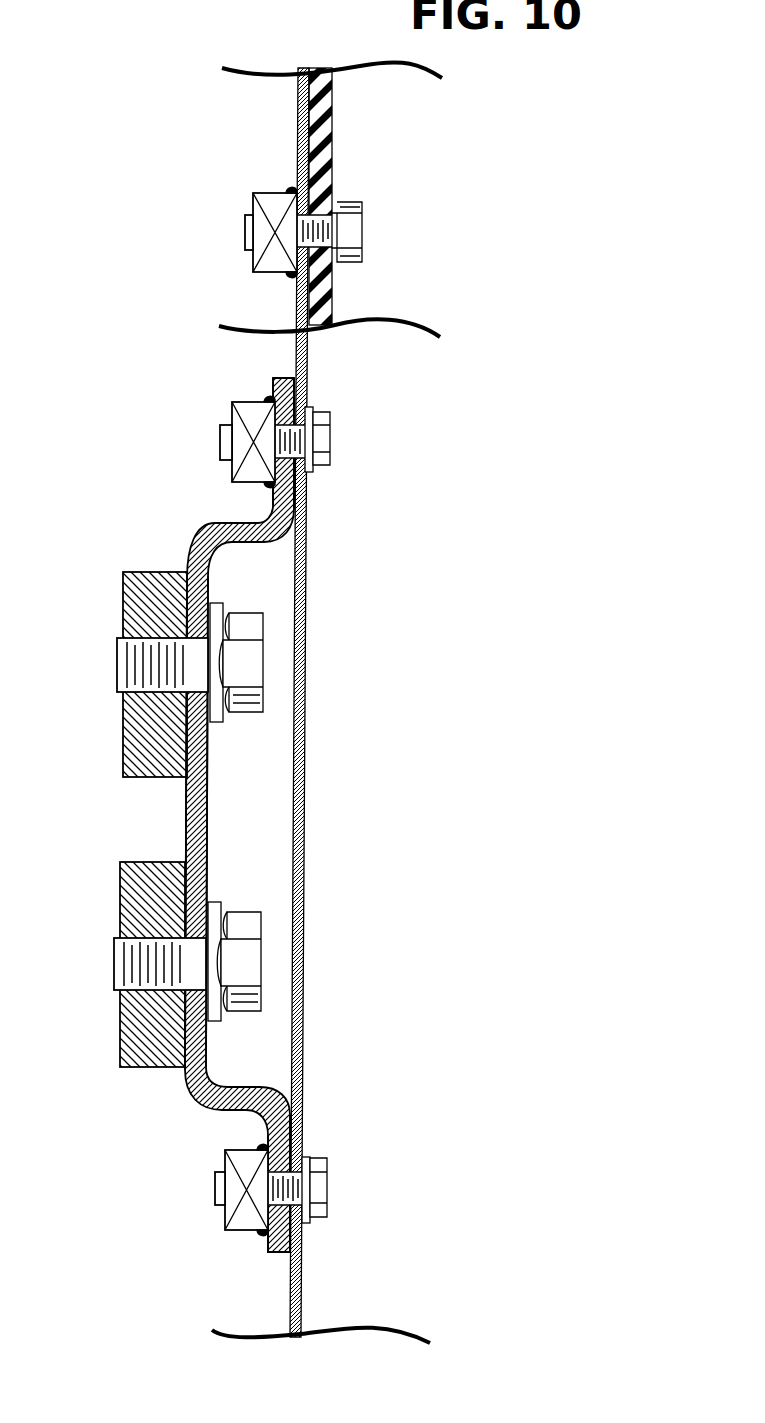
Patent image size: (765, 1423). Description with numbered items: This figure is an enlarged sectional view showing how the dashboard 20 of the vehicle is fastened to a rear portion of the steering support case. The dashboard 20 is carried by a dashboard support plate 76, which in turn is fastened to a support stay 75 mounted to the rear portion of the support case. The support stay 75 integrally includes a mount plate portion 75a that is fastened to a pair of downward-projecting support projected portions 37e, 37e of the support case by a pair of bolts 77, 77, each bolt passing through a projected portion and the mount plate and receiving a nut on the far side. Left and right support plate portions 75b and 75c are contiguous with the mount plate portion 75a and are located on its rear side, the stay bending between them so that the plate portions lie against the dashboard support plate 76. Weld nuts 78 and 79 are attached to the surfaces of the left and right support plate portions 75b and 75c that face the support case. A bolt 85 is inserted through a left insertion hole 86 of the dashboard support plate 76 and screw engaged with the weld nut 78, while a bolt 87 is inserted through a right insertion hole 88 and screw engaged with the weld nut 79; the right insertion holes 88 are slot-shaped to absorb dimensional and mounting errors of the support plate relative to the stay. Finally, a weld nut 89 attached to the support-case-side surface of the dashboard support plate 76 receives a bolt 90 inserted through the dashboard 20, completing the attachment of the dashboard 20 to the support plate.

The dashboard 20 is at (323, 155).
The dashboard support plate 76 is at (303, 855).
The support stay 75 is at (204, 522).
The mount plate portion 75a is at (185, 820).
The left support plate portion 75b is at (268, 1250).
The right support plate portion 75c is at (276, 380).
The support projected portion 37e is at (148, 597).
The bolt 77 is at (247, 667).
The weld nut 78 is at (237, 1163).
The weld nut 79 is at (232, 405).
The bolt 85 is at (325, 1195).
The left insertion hole 86 is at (325, 1180).
The bolt 87 is at (330, 450).
The right insertion hole 88 is at (330, 432).
The weld nut 89 is at (262, 192).
The bolt 90 is at (365, 235).